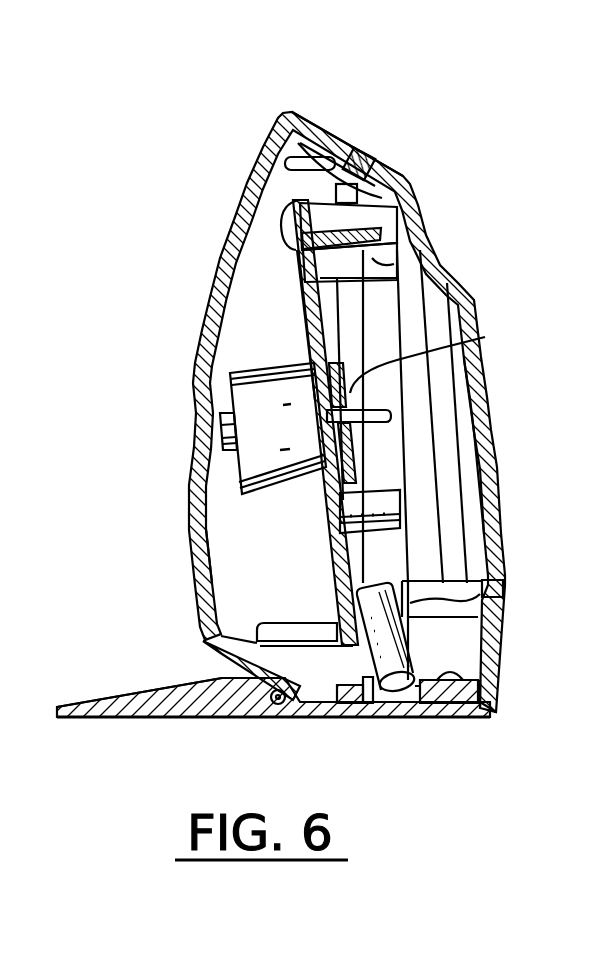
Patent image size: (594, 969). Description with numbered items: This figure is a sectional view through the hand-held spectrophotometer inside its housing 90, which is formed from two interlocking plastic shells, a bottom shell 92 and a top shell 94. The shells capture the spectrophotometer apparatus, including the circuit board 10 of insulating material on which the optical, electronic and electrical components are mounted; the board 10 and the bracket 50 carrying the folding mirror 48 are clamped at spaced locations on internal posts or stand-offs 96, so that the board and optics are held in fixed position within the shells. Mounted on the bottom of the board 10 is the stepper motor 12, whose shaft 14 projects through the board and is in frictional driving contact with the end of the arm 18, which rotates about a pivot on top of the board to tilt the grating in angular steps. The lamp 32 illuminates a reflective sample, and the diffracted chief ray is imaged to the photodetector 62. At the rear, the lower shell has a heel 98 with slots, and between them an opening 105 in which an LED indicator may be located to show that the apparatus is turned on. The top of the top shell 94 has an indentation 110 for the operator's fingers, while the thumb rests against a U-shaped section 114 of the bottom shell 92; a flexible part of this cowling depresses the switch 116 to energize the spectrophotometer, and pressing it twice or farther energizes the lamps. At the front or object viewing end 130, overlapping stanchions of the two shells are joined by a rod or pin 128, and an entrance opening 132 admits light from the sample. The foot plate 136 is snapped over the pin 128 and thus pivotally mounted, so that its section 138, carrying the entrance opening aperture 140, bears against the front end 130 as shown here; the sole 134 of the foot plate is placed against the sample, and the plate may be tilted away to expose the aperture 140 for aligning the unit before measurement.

The circuit board 10 is at (302, 306).
The stepper motor 12 is at (287, 382).
The shaft 14 is at (384, 422).
The arm 18 is at (484, 337).
The lamp 32 is at (492, 582).
The folding mirror 48 is at (372, 262).
The bracket 50 is at (370, 222).
The photodetector 62 is at (402, 510).
The housing 90 is at (548, 290).
The bottom shell 92 is at (496, 456).
The top shell 94 is at (191, 530).
The posts or stand-offs 96 is at (287, 230).
The heel 98 is at (306, 118).
The opening 105 is at (361, 141).
The indentation 110 is at (211, 443).
The U-shaped section 114 is at (488, 395).
The switch 116 is at (458, 636).
The rod or pin 128 is at (296, 720).
The front or object viewing end 130 is at (462, 722).
The entrance opening 132 is at (490, 678).
The sole 134 is at (165, 720).
The foot plate 136 is at (130, 692).
The section 138 is at (234, 721).
The entrance opening aperture 140 is at (414, 721).